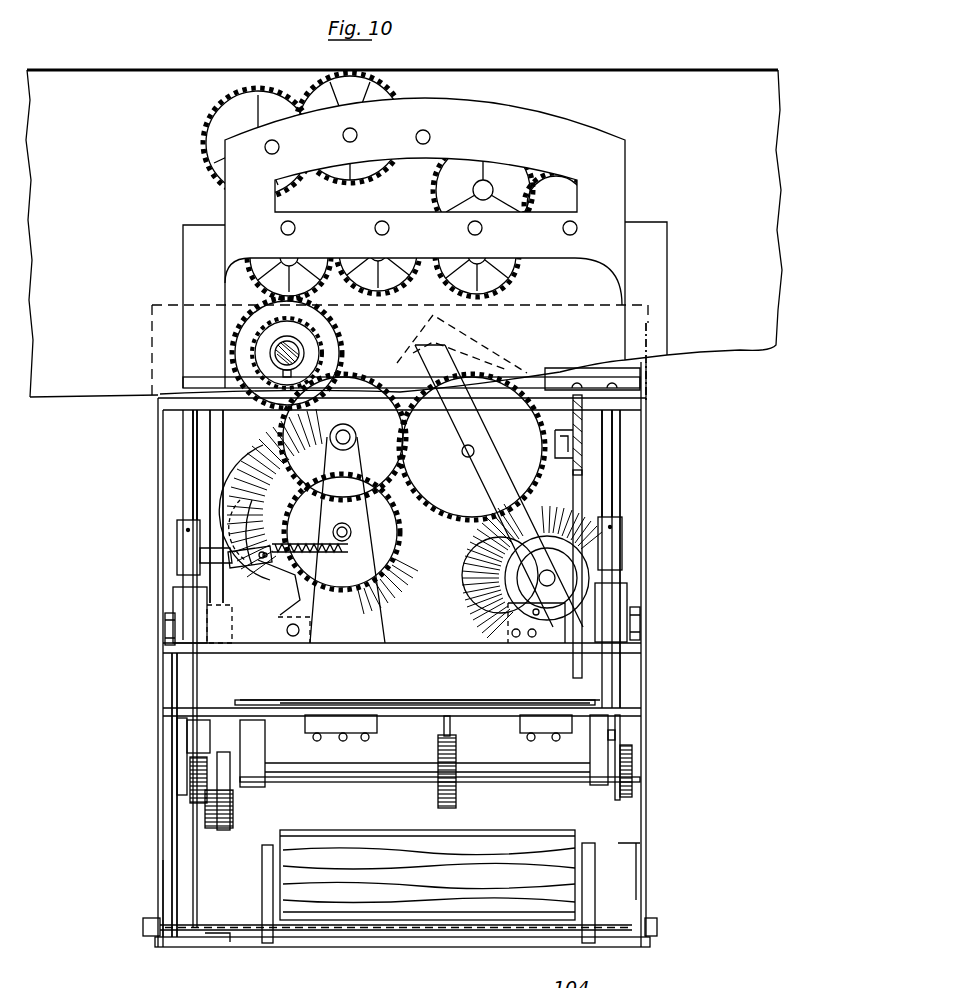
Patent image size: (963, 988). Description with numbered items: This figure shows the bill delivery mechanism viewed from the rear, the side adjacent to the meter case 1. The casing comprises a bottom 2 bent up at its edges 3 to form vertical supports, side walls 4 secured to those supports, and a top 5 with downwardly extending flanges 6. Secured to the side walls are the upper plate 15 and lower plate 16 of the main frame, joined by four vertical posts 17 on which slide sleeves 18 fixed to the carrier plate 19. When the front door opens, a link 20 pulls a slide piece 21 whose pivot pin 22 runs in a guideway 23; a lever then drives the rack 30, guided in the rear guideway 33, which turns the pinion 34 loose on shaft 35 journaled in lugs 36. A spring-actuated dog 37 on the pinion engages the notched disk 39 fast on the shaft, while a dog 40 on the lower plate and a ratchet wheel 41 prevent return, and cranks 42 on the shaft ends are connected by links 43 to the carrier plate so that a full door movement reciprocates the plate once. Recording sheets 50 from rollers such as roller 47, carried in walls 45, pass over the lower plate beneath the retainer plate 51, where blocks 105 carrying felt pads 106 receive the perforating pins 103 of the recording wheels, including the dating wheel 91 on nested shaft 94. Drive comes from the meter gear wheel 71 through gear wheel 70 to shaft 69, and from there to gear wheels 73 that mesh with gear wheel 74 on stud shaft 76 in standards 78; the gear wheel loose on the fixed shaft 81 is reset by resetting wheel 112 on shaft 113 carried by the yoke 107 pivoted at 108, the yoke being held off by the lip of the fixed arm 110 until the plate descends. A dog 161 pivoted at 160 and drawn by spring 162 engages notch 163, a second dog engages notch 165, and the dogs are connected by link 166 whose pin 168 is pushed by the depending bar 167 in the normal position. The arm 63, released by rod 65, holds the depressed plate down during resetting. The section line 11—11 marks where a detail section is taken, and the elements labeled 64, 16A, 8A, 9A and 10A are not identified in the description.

The meter case 1 is at (677, 100).
The bottom 2 is at (432, 946).
The bent-up edges 3 is at (165, 882).
The side walls 4 is at (158, 430).
The top 5 is at (605, 303).
The downwardly extending flanges 6 is at (648, 325).
The gear wheel 71 is at (242, 271).
The gear wheels 73 is at (325, 348).
The shaft 69 is at (306, 355).
The gear wheel 70 is at (333, 357).
The fixed arm 110 is at (545, 380).
The upper plate 15 is at (630, 410).
The rod 65 is at (590, 458).
The bracket 64 is at (571, 487).
The arm 63 is at (576, 670).
The depending bar 167 is at (216, 447).
The perforating pins 103 is at (240, 452).
The gear wheel 74 is at (343, 437).
The stud shaft 76 is at (356, 437).
The standards 78 is at (347, 540).
The fixed shaft 81 is at (342, 523).
The resetting wheel 112 is at (472, 447).
The resetting shaft 113 is at (462, 452).
The yoke 107 is at (457, 470).
The pivot 108 is at (532, 618).
The vertical posts 17 is at (180, 515).
The notch 165 is at (240, 510).
The slide block 16A is at (226, 536).
The pin 168 is at (236, 553).
The sleeves 18 is at (186, 604).
The notch 163 is at (306, 565).
The spring 162 is at (322, 569).
The dog 161 is at (292, 595).
The links 43 is at (166, 628).
The link 166 is at (239, 625).
The pivot 160 is at (300, 630).
The brush wheel 8A is at (366, 600).
The dating wheel 91 is at (462, 594).
The brush wheel 9A is at (547, 572).
The nested shaft 94 is at (547, 578).
The carrier plate 19 is at (170, 651).
The lower plate 16 is at (648, 712).
The rack 30 is at (196, 720).
The rear guideway 33 is at (212, 725).
The plate 10A is at (290, 720).
The section line 11 is at (352, 742).
The retainer plate 51 is at (440, 712).
The pads 106 is at (310, 733).
The dog 40 is at (442, 735).
The ratchet wheel 41 is at (458, 753).
The blocks 105 is at (546, 737).
The cranks 42 is at (188, 780).
The disk 39 is at (224, 782).
The lugs 36 is at (260, 780).
The recording sheets 50 is at (388, 832).
The shaft 35 is at (522, 782).
The pinion 34 is at (202, 811).
The spring-actuated dog 37 is at (223, 825).
The walls 45 is at (598, 843).
The slide piece 21 is at (170, 880).
The link 20 is at (187, 896).
The roller 47 is at (272, 876).
The pivot pin 22 is at (185, 940).
The guideway 23 is at (217, 944).